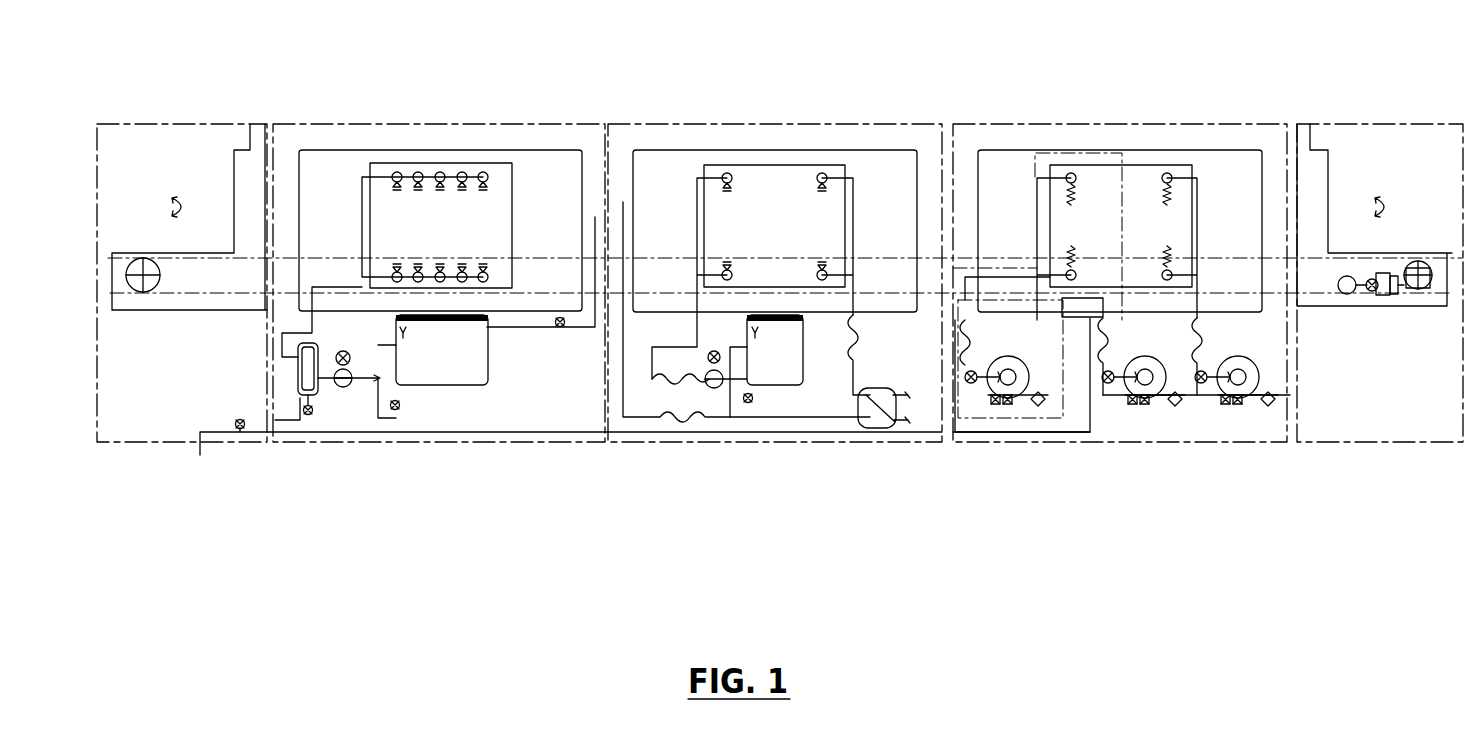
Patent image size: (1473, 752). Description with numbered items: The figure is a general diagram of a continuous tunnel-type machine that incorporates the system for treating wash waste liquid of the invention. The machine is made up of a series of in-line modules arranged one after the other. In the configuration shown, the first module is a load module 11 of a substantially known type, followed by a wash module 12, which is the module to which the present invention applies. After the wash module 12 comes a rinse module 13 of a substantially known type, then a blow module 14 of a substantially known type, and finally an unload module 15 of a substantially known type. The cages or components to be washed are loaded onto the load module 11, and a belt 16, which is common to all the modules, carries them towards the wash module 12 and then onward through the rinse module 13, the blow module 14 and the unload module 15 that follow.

The load module 11 is at (147, 390).
The wash module 12 is at (512, 390).
The rinse module 13 is at (842, 357).
The blow module 14 is at (1157, 343).
The unload module 15 is at (1393, 365).
The belt 16 is at (207, 254).